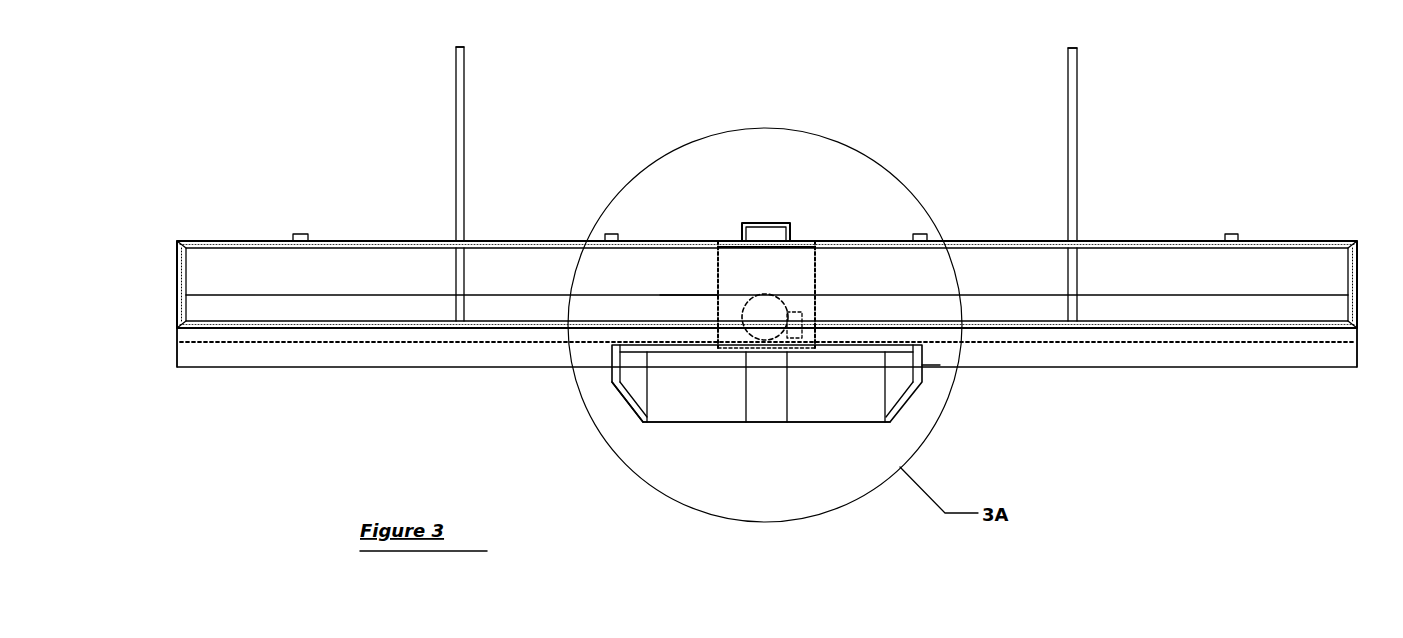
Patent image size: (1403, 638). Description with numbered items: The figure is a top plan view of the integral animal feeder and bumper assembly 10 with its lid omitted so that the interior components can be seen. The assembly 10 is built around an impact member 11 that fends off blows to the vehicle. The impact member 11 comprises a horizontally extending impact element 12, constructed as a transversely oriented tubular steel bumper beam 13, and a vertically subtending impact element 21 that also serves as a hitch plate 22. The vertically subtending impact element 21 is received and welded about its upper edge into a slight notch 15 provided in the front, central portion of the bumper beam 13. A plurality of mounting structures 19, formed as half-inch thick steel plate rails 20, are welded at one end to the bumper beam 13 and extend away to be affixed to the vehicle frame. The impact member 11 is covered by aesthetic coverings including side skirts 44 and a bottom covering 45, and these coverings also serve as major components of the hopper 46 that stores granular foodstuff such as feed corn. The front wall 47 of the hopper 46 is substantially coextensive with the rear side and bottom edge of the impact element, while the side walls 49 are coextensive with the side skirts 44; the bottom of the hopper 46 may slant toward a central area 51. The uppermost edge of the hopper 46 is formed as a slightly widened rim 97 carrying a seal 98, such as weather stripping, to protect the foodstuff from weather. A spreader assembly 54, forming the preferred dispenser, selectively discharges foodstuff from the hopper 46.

The integral animal feeder and bumper assembly 10 is at (1220, 138).
The impact member 11 is at (228, 352).
The horizontally extending impact element 12 is at (1303, 355).
The tubular steel bumper beam 13 is at (1117, 353).
The notch 15 is at (940, 366).
The mounting structures 19 is at (455, 153).
The rails 20 is at (465, 87).
The vertically subtending impact element 21 is at (822, 405).
The hitch plate 22 is at (630, 385).
The side skirts 44 is at (176, 287).
The bottom covering 45 is at (767, 284).
The hopper 46 is at (1033, 248).
The front wall 47 is at (314, 343).
The side walls 49 is at (186, 274).
The central area 51 is at (685, 283).
The spreader assembly 54 is at (790, 265).
The rim 97 is at (345, 240).
The seal 98 is at (1237, 328).